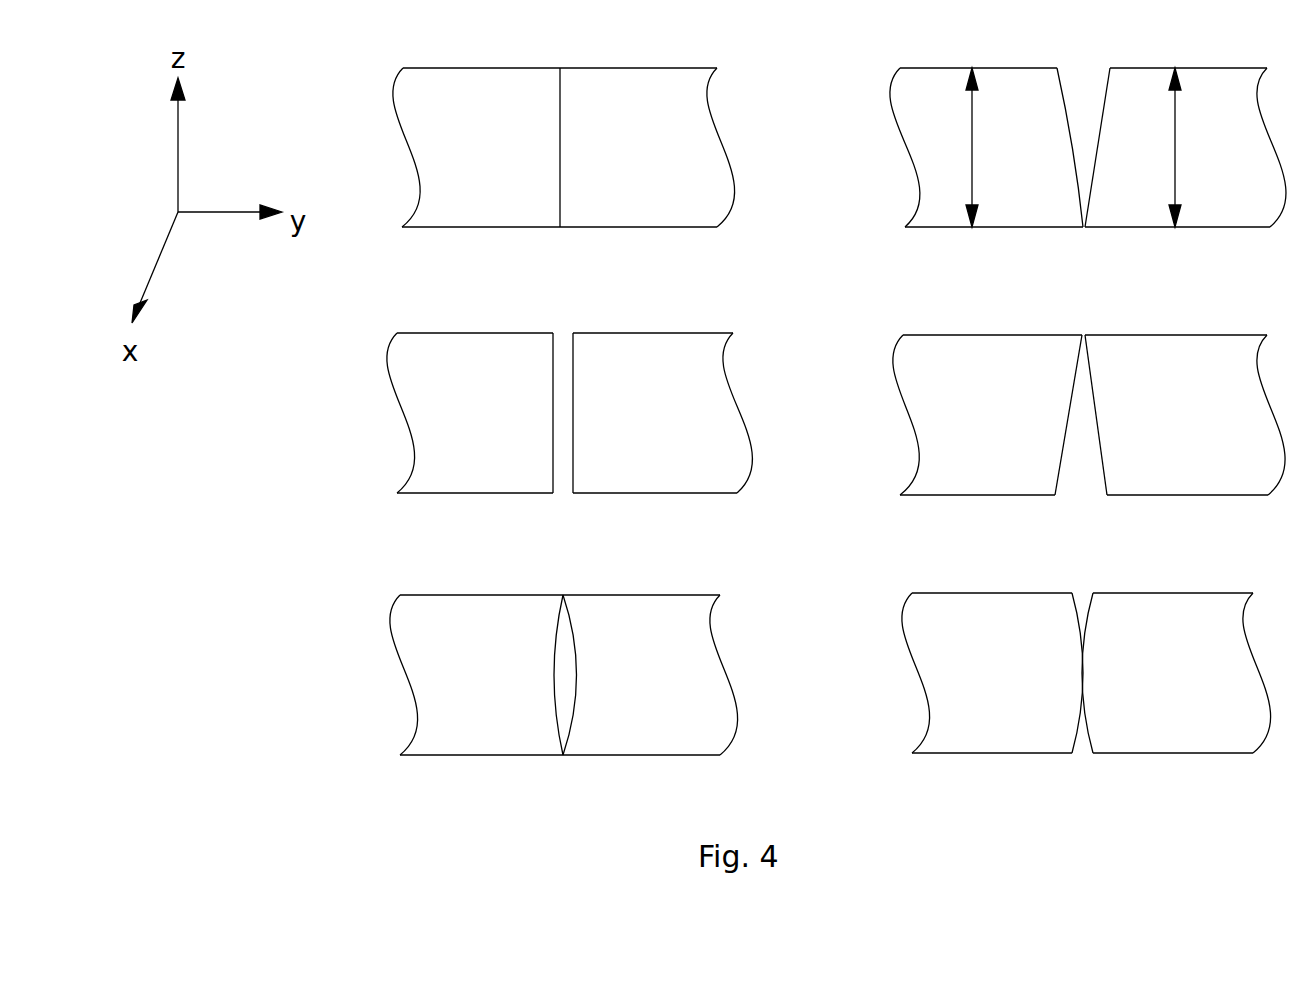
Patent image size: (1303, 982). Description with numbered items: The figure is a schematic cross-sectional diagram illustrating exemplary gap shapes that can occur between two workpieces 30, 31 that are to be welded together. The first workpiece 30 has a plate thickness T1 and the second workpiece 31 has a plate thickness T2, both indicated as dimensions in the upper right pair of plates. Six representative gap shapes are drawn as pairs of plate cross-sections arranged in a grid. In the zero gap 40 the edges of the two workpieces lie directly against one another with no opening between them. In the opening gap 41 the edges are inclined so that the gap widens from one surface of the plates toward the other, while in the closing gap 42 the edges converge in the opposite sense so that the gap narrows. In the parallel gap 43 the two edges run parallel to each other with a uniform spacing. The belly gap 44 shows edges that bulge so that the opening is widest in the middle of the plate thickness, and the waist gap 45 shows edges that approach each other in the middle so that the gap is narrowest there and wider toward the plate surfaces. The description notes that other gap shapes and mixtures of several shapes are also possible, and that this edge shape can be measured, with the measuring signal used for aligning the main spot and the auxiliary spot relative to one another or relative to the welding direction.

The workpiece 30 is at (453, 133).
The workpiece 31 is at (682, 158).
The zero gap 40 is at (555, 163).
The opening gap 41 is at (1088, 165).
The closing gap 42 is at (1085, 437).
The parallel gap 43 is at (563, 423).
The belly gap 44 is at (562, 675).
The waist gap 45 is at (1085, 678).
The plate thickness T1 is at (992, 147).
The plate thickness T2 is at (1196, 147).